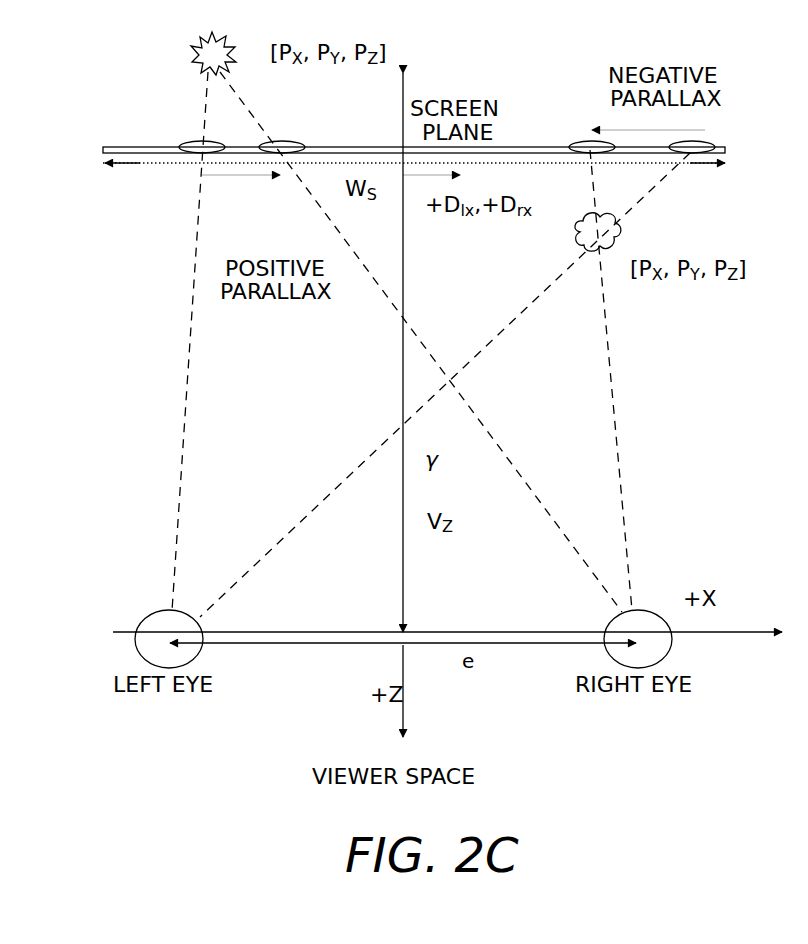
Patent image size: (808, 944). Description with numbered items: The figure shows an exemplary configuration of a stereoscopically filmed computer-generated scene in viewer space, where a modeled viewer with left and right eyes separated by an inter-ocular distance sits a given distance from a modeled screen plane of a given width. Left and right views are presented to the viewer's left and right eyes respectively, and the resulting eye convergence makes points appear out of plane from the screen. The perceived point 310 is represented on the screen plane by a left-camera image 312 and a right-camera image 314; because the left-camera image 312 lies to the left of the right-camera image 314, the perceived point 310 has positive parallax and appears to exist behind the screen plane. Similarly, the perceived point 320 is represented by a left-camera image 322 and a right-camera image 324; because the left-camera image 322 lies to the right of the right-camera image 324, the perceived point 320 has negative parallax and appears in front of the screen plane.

The perceived point 310 is at (195, 56).
The left-camera image 312 is at (193, 143).
The right-camera image 314 is at (296, 143).
The perceived point 320 is at (618, 231).
The left-camera image 322 is at (713, 143).
The right-camera image 324 is at (588, 142).